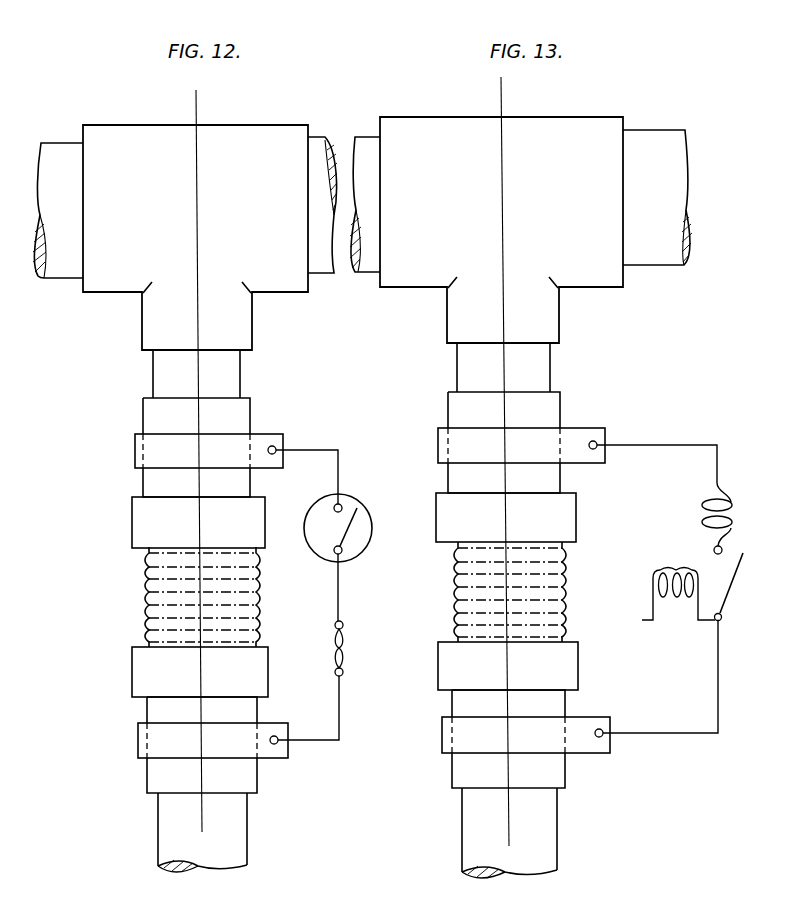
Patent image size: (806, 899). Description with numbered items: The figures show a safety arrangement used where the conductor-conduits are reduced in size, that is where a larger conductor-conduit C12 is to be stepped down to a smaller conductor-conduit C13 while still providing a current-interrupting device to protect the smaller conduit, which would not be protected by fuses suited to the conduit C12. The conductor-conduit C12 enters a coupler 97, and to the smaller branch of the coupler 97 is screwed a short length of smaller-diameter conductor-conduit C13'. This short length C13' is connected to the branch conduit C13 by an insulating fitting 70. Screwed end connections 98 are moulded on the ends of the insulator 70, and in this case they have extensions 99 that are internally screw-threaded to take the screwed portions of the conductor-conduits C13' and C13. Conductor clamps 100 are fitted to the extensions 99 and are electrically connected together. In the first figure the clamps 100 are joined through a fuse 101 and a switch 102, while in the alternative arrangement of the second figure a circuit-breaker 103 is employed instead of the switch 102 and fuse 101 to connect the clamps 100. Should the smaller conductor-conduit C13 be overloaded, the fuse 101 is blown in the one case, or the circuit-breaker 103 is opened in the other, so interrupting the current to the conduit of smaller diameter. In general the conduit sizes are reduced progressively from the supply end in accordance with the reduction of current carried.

In FIG. 12, the coupler 97 is at (195, 237).
In FIG. 13, the coupler 97 is at (501, 230).
In FIG. 12, the conductor-conduit C12 is at (65, 270).
In FIG. 13, the conductor-conduit C12 is at (370, 265).
In FIG. 12, the conductor-conduit C13 is at (222, 832).
In FIG. 13, the conductor-conduit C13 is at (534, 833).
In FIG. 12, the conductor-conduit C13' is at (219, 374).
In FIG. 12, the screwed end connection 98 is at (143, 515).
In FIG. 13, the screwed end connection 98 is at (445, 517).
In FIG. 12, the extension 99 is at (158, 412).
In FIG. 13, the extension 99 is at (465, 412).
In FIG. 12, the conductor clamp 100 is at (263, 438).
In FIG. 13, the conductor clamp 100 is at (588, 432).
In FIG. 12, the insulating fitting 70 is at (155, 596).
In FIG. 13, the insulating fitting 70 is at (462, 596).
In FIG. 12, the fuse 101 is at (345, 652).
In FIG. 12, the switch 102 is at (317, 545).
In FIG. 13, the circuit-breaker 103 is at (742, 594).